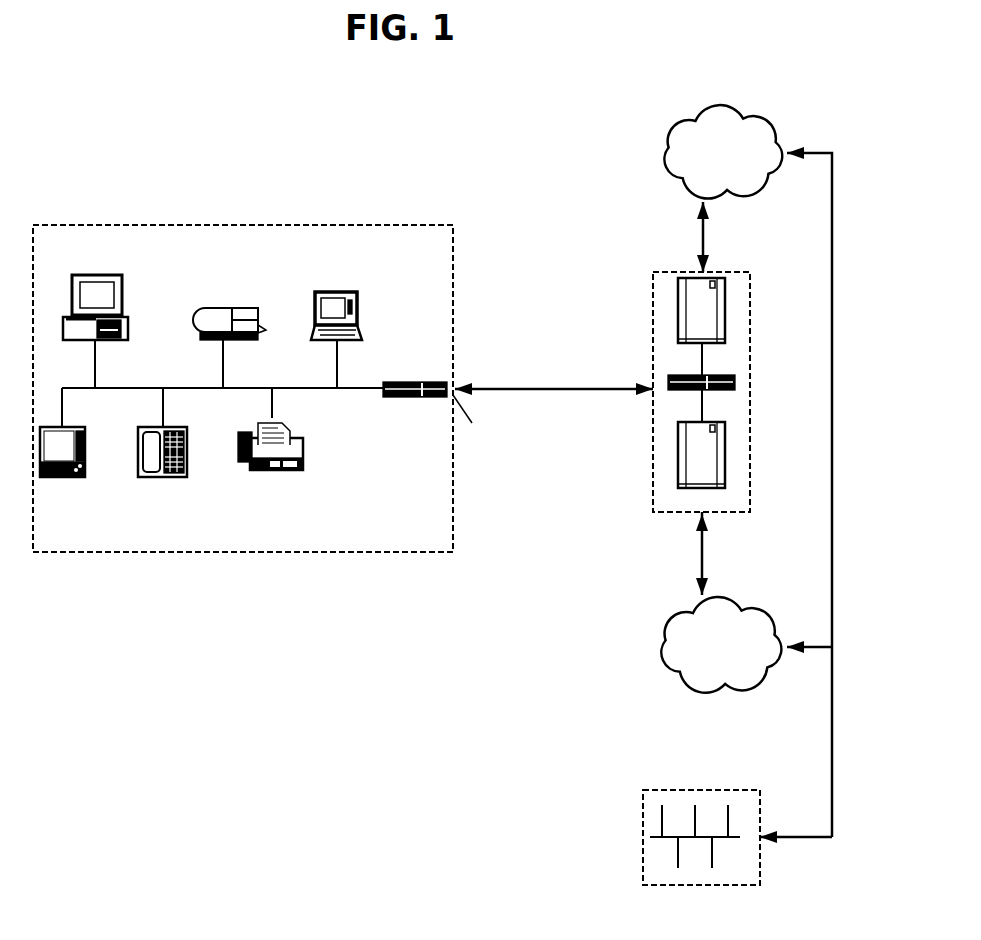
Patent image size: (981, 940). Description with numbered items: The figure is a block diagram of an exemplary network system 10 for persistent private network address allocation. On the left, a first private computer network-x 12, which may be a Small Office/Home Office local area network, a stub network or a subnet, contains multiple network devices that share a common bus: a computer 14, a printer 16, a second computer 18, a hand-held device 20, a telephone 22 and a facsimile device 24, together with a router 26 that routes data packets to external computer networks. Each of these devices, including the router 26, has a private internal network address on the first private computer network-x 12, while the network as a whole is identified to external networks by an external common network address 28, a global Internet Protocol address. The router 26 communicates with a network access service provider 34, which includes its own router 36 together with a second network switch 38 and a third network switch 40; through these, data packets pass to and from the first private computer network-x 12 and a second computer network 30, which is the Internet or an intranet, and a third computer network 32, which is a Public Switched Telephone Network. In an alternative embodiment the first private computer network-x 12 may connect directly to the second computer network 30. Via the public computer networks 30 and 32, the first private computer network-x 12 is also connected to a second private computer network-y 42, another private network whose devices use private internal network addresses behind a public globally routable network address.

The network system 10 is at (718, 67).
The first private computer network-x 12 is at (397, 550).
The computer 14 is at (130, 325).
The printer 16 is at (257, 325).
The computer 18 is at (357, 318).
The hand-held device 20 is at (83, 452).
The telephone 22 is at (187, 452).
The facsimile device 24 is at (303, 448).
The router 26 is at (410, 382).
The external common network address 28 is at (502, 448).
The second computer network 30 is at (657, 645).
The third computer network 32 is at (660, 153).
The network access service provider 34 is at (750, 273).
The router 36 is at (727, 392).
The second network switch 38 is at (728, 453).
The third network switch 40 is at (678, 313).
The second private computer network-y 42 is at (645, 835).